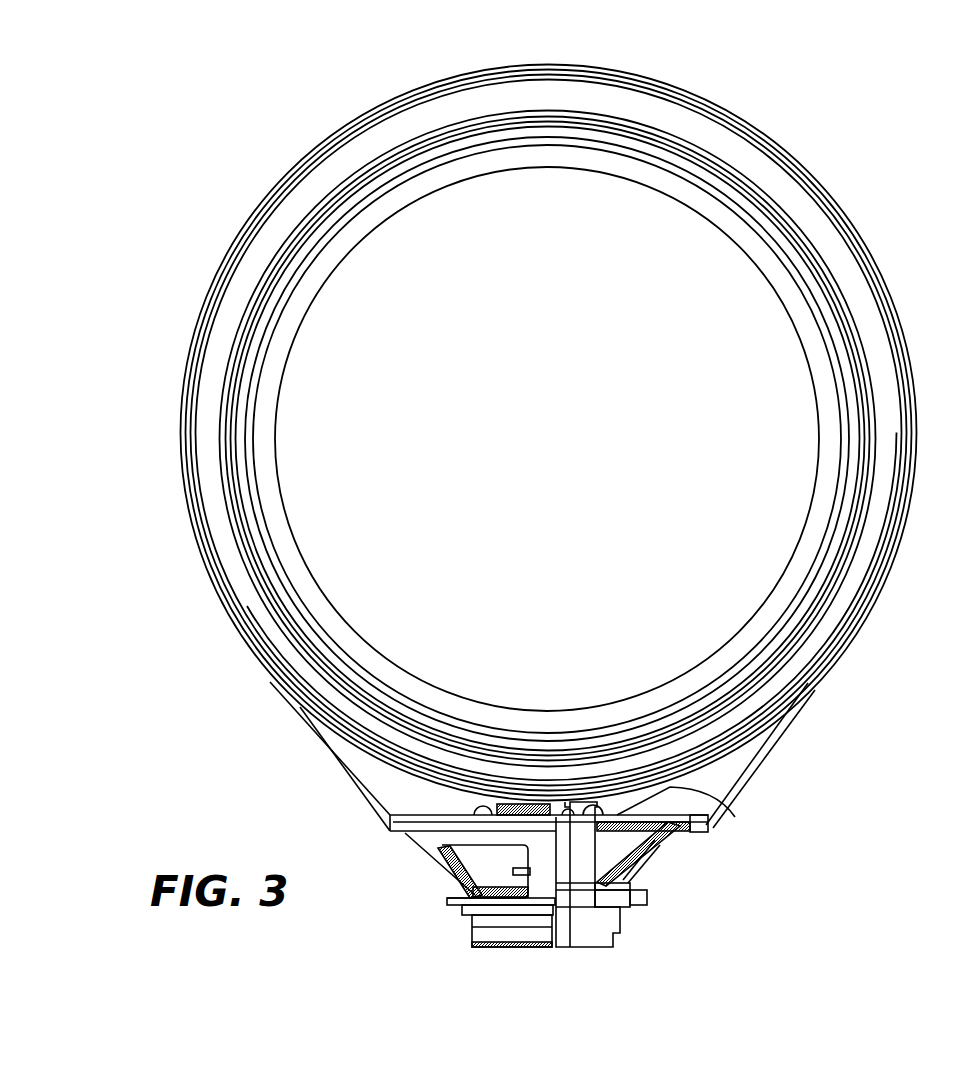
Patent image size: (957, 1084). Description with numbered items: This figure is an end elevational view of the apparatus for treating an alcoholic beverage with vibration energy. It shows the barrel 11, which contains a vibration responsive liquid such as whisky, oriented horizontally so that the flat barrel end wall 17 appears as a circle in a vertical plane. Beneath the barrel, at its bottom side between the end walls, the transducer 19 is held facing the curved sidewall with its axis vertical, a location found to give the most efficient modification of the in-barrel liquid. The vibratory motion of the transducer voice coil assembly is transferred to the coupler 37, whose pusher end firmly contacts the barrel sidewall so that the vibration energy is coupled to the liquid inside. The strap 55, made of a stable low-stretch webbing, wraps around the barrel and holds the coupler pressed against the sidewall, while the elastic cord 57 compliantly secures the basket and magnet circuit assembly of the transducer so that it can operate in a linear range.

The barrel 11 is at (460, 78).
The barrel end wall 17 is at (760, 490).
The transducer 19 is at (415, 838).
The coupler 37 is at (477, 807).
The strap 55 is at (663, 867).
The elastic cord 57 is at (747, 768).